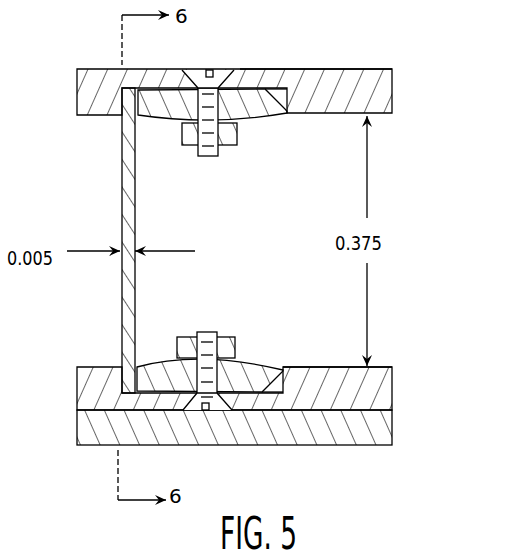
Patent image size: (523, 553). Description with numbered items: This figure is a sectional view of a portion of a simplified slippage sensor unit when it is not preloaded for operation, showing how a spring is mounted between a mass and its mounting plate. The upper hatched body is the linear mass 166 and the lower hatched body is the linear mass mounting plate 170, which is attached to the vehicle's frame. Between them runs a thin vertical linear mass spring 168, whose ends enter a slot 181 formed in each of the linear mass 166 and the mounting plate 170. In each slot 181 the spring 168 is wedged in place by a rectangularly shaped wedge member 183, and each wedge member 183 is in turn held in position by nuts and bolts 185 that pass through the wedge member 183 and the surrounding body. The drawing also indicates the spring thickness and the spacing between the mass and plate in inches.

The linear mass 166 is at (377, 67).
The linear mass springs 168 is at (136, 238).
The linear mass mounting plate 170 is at (332, 445).
The slot 181 is at (278, 68).
The wedge members 183 is at (261, 115).
The nuts and bolts 185 is at (223, 146).